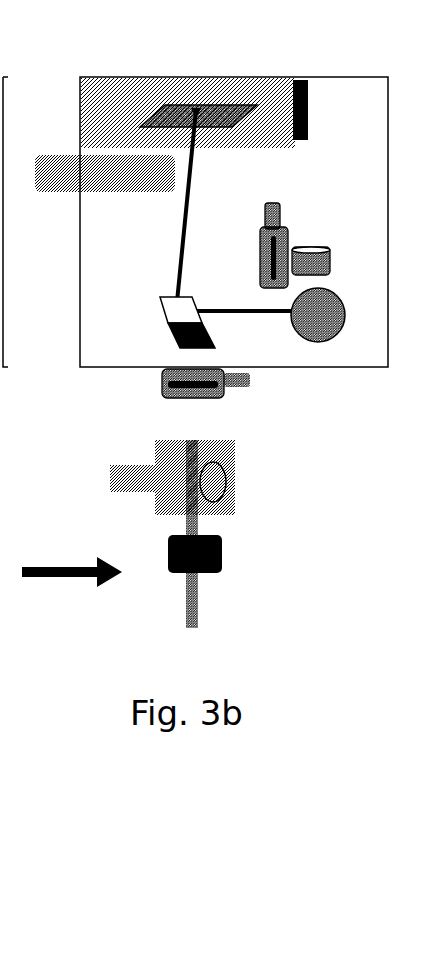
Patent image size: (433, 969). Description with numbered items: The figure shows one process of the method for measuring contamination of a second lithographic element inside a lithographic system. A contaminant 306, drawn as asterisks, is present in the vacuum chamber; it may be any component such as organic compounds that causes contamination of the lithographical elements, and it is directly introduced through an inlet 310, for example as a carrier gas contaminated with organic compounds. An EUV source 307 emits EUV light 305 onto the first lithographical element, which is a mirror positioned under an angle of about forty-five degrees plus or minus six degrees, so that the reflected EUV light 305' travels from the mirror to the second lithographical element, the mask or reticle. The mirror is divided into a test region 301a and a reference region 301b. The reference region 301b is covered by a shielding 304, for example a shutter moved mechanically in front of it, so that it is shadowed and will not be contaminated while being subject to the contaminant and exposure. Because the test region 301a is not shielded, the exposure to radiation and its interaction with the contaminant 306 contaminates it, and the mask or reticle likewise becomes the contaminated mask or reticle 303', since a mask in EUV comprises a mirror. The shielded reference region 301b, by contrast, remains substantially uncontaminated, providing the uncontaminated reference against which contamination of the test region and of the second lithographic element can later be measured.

The contaminated mask or reticle 303' is at (221, 76).
The inlet 310 is at (105, 173).
The contaminant 306 is at (223, 224).
The reflected EUV light 305' is at (163, 210).
The EUV light 305 is at (234, 326).
The test region 301a is at (153, 312).
The reference region 301b is at (160, 337).
The EUV source 307 is at (347, 315).
The shielding 304 is at (220, 347).